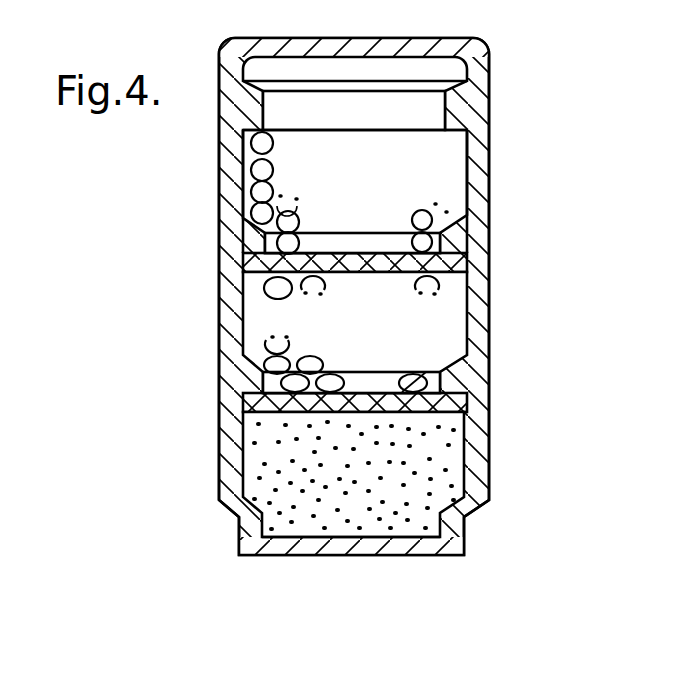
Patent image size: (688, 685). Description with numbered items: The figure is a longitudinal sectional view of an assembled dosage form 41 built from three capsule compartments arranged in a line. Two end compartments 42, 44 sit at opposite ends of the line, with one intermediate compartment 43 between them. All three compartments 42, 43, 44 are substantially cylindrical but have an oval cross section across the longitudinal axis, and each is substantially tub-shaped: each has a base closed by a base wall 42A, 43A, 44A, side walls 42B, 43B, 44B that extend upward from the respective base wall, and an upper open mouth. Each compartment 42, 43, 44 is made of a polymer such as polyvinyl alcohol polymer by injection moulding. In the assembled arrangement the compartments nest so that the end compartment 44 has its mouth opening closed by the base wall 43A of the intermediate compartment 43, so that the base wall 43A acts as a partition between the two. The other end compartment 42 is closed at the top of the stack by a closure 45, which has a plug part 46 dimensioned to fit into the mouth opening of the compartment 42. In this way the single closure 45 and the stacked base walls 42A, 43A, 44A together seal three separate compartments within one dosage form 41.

The dosage form 41 is at (212, 518).
The end compartment 42 is at (220, 153).
The base wall 42A is at (450, 212).
The side walls 42B is at (477, 143).
The intermediate compartment 43 is at (250, 318).
The base wall 43A is at (445, 352).
The side walls 43B is at (477, 293).
The end compartment 44 is at (250, 447).
The base wall 44A is at (430, 557).
The side walls 44B is at (487, 447).
The closure 45 is at (490, 53).
The plug part 46 is at (455, 105).